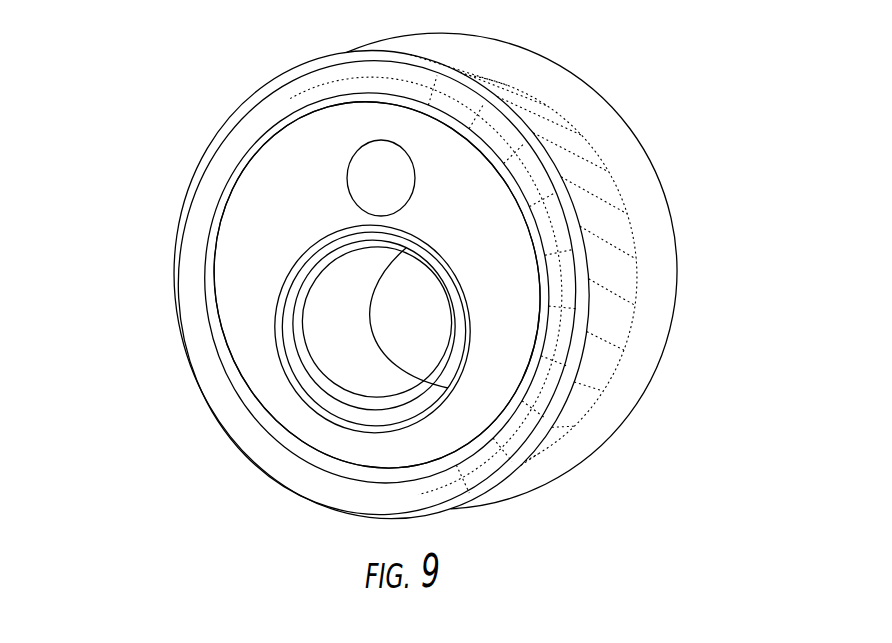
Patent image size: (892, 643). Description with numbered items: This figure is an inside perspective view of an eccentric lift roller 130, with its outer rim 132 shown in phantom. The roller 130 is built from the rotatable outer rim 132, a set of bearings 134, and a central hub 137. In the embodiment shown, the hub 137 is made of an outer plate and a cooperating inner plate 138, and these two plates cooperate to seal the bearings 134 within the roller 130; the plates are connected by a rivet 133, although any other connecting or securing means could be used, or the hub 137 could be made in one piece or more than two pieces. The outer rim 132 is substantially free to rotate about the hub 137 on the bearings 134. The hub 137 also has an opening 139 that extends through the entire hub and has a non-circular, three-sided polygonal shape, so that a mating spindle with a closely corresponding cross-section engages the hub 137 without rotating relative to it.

The eccentric lift roller 130 is at (690, 398).
The outer rim 132 is at (183, 200).
The rivet 133 is at (397, 163).
The bearings 134 is at (617, 249).
The hub 137 is at (211, 270).
The inner plate 138 is at (267, 377).
The opening 139 is at (432, 338).